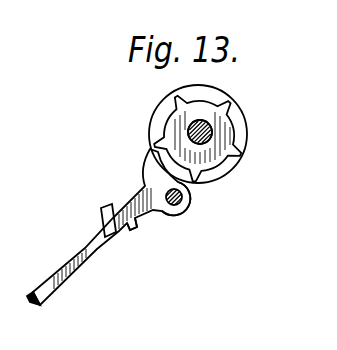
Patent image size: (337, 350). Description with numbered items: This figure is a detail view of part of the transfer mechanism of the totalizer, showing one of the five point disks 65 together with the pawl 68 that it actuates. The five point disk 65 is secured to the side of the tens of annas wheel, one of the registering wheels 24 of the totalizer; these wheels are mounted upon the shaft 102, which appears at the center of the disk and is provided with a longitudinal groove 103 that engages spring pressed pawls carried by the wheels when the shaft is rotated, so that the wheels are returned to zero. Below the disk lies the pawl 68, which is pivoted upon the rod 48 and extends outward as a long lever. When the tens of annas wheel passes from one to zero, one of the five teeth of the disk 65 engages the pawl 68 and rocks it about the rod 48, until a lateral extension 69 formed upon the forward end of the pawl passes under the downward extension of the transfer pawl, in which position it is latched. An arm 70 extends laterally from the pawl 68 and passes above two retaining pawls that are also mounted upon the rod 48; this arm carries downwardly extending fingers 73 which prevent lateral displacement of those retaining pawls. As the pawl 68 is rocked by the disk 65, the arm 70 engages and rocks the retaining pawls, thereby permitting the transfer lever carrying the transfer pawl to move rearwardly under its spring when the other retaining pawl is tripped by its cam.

The registering wheel 24 is at (247, 117).
The five point disk 65 is at (232, 165).
The longitudinal groove 103 is at (203, 121).
The shaft 102 is at (188, 133).
The pawl 68 is at (85, 246).
The lateral extension 69 is at (28, 305).
The arm 70 is at (104, 210).
The downwardly extending fingers 73 is at (108, 236).
The rod 48 is at (183, 202).